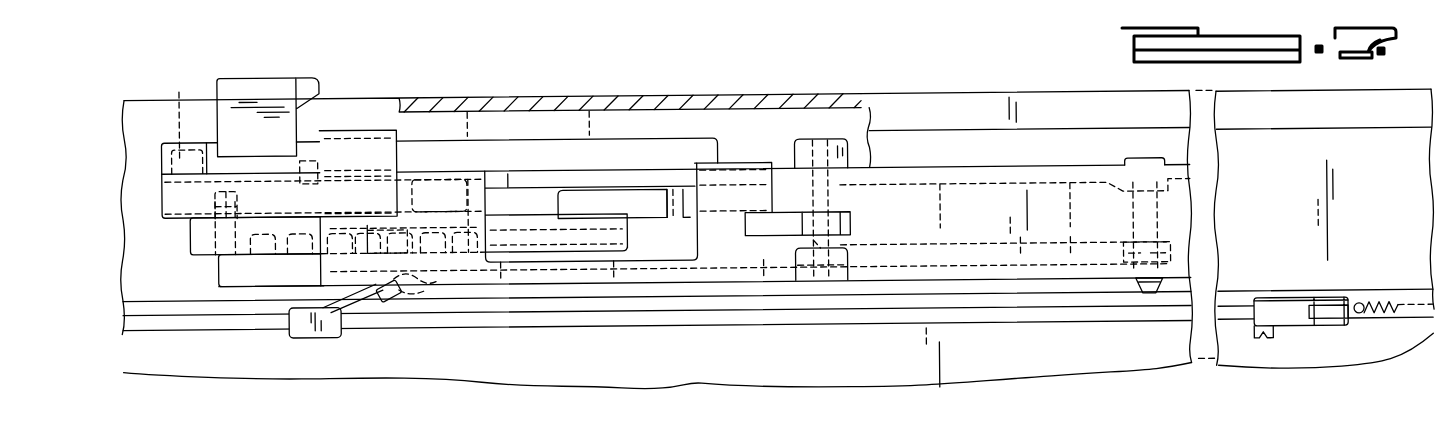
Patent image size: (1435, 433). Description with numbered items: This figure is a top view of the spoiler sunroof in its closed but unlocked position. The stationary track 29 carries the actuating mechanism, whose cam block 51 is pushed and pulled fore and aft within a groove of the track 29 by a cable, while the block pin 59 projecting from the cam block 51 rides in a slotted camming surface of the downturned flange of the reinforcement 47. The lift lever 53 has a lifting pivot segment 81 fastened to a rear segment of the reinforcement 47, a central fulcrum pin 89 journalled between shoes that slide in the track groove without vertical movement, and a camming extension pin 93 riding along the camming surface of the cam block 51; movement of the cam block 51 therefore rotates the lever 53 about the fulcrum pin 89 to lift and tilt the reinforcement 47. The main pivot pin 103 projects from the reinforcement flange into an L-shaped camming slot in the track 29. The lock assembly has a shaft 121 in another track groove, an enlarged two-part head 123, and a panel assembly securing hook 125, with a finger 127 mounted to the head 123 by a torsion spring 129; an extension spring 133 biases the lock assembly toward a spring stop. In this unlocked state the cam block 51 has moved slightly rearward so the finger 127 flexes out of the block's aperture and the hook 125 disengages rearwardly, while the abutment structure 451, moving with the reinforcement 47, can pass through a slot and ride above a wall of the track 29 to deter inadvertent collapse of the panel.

The track 29 is at (368, 107).
The reinforcement 47 is at (957, 178).
The cam block 51 is at (238, 277).
The lift lever 53 is at (650, 207).
The block pin 59 is at (237, 205).
The lifting pivot segment 81 is at (1123, 270).
The fulcrum pin 89 is at (817, 147).
The camming extension pin 93 is at (575, 232).
The main pivot pin 103 is at (171, 119).
The shaft 121 is at (705, 320).
The head 123 is at (300, 335).
The panel assembly securing hook 125 is at (1283, 324).
The finger 127 is at (390, 293).
The torsion spring 129 is at (360, 304).
The extension spring 133 is at (1393, 326).
The abutment structure 451 is at (313, 153).